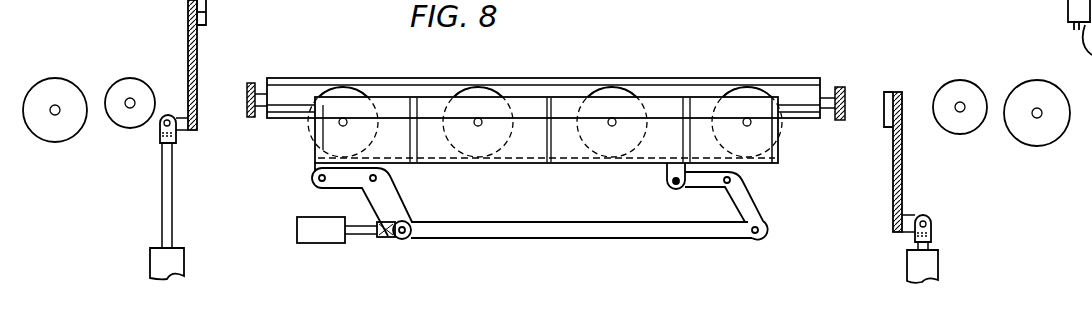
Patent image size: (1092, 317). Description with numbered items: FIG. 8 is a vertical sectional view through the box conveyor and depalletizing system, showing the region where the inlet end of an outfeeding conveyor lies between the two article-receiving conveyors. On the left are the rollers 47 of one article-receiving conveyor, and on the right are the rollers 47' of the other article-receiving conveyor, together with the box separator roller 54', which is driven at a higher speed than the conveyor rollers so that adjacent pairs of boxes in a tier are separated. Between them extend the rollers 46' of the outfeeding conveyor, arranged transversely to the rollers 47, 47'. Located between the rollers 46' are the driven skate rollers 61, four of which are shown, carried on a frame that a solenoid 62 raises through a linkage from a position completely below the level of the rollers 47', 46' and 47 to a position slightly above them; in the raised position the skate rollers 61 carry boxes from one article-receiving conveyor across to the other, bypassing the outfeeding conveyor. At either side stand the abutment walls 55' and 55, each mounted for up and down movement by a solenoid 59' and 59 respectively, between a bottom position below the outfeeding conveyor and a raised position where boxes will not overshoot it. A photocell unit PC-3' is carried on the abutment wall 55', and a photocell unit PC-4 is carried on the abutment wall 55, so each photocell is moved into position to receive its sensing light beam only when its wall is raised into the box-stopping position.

The rollers 47 is at (55, 92).
The abutment wall 55' is at (168, 65).
The photocell unit PC-3' is at (245, 18).
The solenoid 59 is at (137, 197).
The rollers 46' is at (546, 79).
The driven skate rollers 61 is at (466, 86).
The solenoid 62 is at (303, 217).
The abutment wall 55 is at (929, 162).
The photocell unit PC-4 is at (888, 92).
The solenoid 59' is at (954, 249).
The box separator roller 54' is at (963, 83).
The rollers 47' is at (1037, 92).